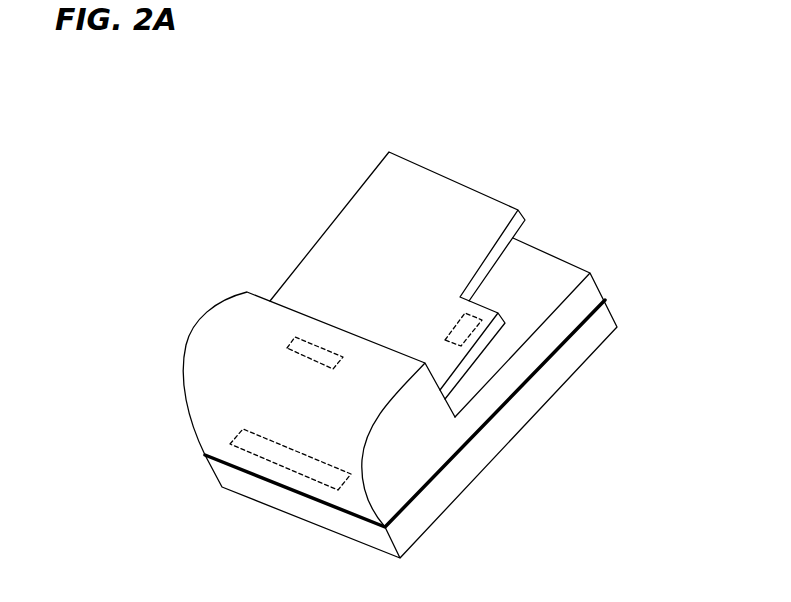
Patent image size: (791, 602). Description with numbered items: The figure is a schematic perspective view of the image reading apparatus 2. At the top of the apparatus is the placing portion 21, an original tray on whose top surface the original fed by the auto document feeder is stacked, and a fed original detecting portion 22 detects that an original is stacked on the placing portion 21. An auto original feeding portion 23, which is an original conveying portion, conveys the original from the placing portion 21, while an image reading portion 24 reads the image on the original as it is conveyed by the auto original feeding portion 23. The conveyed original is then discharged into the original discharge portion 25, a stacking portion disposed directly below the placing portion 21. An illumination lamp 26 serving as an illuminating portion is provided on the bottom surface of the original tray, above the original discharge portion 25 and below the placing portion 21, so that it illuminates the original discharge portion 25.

The image reading apparatus 2 is at (175, 304).
The placing portion 21 is at (467, 203).
The fed original detecting portion 22 is at (312, 350).
The auto original feeding portion 23 is at (207, 413).
The image reading portion 24 is at (295, 462).
The original discharge portion 25 is at (535, 283).
The illumination lamp 26 is at (465, 330).